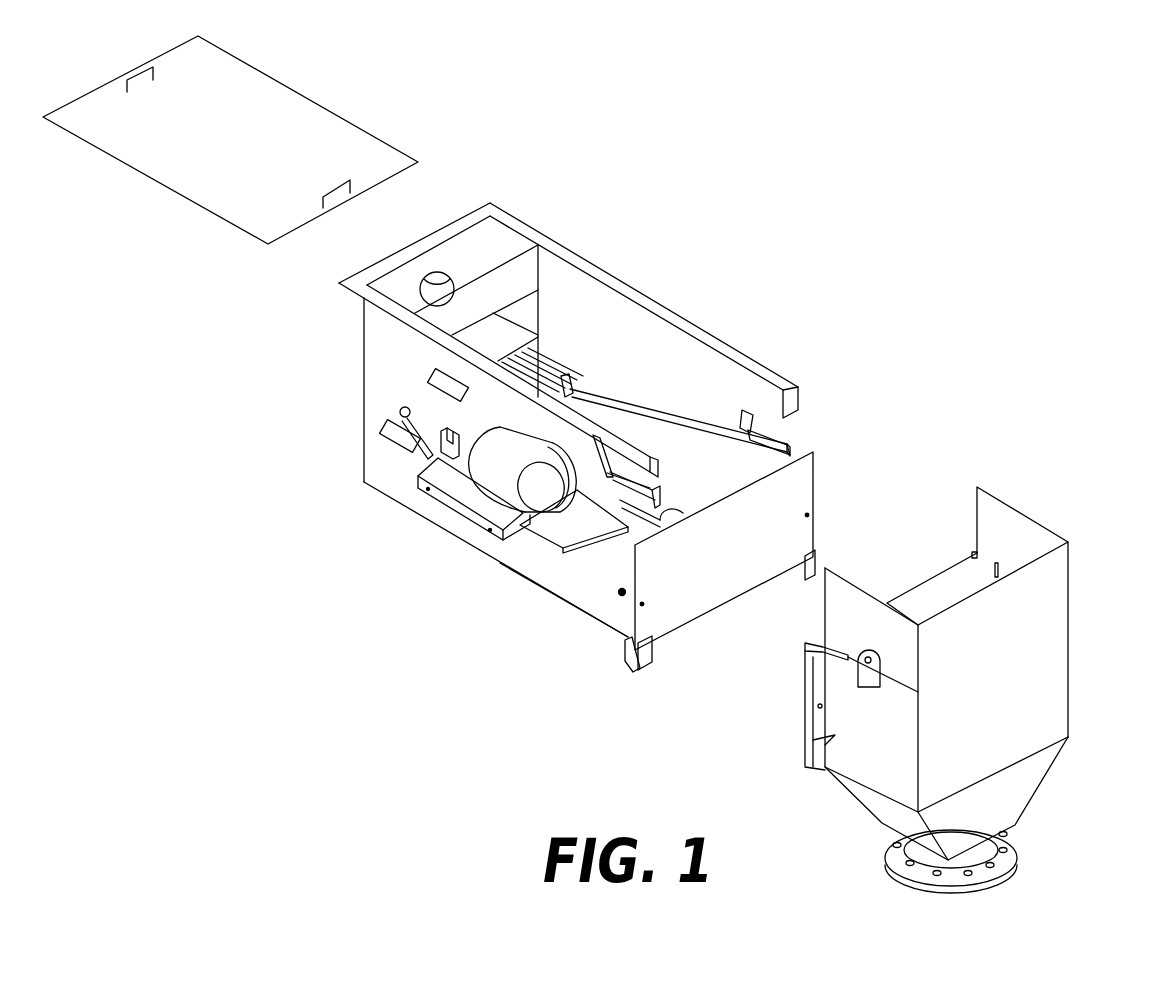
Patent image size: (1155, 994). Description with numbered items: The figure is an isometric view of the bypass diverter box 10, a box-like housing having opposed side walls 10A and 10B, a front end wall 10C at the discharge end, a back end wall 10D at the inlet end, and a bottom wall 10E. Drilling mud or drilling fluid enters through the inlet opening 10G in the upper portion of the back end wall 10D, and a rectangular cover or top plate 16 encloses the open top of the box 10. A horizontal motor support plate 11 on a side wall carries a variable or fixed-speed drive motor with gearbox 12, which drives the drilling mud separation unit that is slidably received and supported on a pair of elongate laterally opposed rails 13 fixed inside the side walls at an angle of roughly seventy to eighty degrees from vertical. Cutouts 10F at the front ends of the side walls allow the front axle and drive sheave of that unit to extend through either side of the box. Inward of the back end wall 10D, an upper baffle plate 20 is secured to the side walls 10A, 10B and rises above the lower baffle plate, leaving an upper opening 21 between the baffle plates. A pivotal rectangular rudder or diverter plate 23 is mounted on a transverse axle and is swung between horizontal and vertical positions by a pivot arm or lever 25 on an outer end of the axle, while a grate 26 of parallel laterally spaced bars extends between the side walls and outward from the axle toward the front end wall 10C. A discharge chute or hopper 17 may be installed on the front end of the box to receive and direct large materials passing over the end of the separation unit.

The bypass diverter box 10 is at (791, 309).
The side wall 10A is at (378, 383).
The side wall 10B is at (658, 325).
The front end wall 10C is at (693, 620).
The back end wall 10D is at (393, 278).
The bottom wall 10E is at (562, 600).
The cutouts 10F is at (777, 428).
The inlet opening 10G is at (447, 282).
The horizontal motor support plate 11 is at (458, 510).
The drive motor with gearbox 12 is at (513, 438).
The rails 13 is at (673, 410).
The cover or top plate 16 is at (307, 112).
The discharge chute or hopper 17 is at (1060, 665).
The upper baffle plate 20 is at (530, 277).
The upper opening 21 is at (530, 310).
The rudder or diverter plate 23 is at (527, 332).
The pivot arm or lever 25 is at (412, 448).
The grate 26 is at (563, 367).